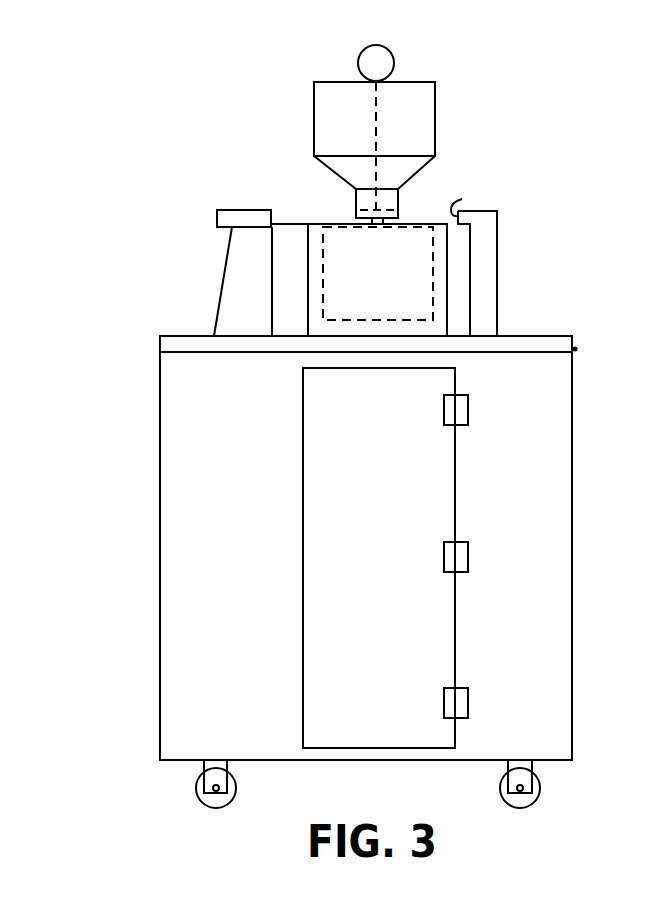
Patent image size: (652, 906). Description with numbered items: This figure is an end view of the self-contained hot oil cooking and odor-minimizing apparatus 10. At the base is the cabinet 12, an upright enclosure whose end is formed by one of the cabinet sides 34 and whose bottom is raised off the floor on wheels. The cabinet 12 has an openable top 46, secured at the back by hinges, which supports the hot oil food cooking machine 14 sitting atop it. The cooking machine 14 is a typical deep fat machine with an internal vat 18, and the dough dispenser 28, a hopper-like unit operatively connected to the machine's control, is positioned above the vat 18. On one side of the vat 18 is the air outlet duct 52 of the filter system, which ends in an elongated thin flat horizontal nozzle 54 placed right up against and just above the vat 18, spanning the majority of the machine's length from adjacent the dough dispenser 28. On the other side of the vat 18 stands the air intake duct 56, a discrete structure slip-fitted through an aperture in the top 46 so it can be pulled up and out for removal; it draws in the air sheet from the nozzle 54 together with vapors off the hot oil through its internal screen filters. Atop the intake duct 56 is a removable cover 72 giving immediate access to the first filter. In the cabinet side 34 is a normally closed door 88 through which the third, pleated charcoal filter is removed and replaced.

The apparatus 10 is at (513, 82).
The cabinet 12 is at (148, 713).
The hot oil food cooking machine 14 is at (443, 187).
The vat 18 is at (307, 232).
The dough dispenser 28 is at (328, 105).
The side 34 is at (535, 527).
The openable top 46 is at (543, 336).
The air outlet duct 52 is at (487, 277).
The nozzle 54 is at (462, 199).
The air intake duct 56 is at (229, 273).
The removable cover 72 is at (253, 215).
The door 88 is at (385, 558).